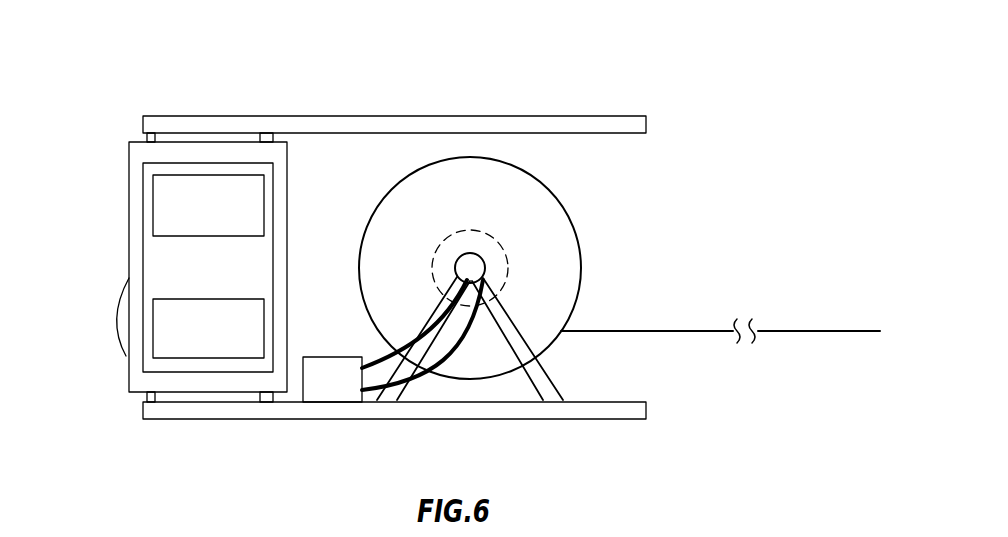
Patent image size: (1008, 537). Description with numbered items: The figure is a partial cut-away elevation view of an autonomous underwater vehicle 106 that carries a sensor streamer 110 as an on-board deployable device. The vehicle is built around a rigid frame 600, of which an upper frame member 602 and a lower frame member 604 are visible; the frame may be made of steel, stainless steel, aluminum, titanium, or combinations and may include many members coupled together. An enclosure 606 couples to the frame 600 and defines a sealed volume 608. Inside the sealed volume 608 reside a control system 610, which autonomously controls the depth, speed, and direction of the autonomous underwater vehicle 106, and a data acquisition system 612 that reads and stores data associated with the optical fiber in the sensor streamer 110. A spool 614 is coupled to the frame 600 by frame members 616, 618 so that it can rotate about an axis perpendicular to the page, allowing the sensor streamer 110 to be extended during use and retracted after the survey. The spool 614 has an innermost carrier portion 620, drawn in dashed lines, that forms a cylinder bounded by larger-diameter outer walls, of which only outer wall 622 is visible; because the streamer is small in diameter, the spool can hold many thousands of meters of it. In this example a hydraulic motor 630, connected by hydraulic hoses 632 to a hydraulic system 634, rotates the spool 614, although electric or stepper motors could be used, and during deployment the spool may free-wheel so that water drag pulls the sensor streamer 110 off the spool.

The autonomous underwater vehicle 106 is at (133, 100).
The sensor streamer 110 is at (825, 331).
The frame 600 is at (673, 97).
The upper frame member 602 is at (352, 123).
The lower frame member 604 is at (295, 407).
The enclosure 606 is at (137, 213).
The sealed volume 608 is at (173, 268).
The control system 610 is at (153, 185).
The data acquisition system (DAS) 612 is at (153, 343).
The spool 614 is at (533, 197).
The frame member 616 is at (388, 398).
The frame member 618 is at (553, 397).
The innermost carrier portion 620 is at (464, 231).
The outer wall 622 is at (558, 273).
The hydraulic motor 630 is at (458, 258).
The hydraulic hoses 632 is at (472, 339).
The hydraulic system 634 is at (353, 391).